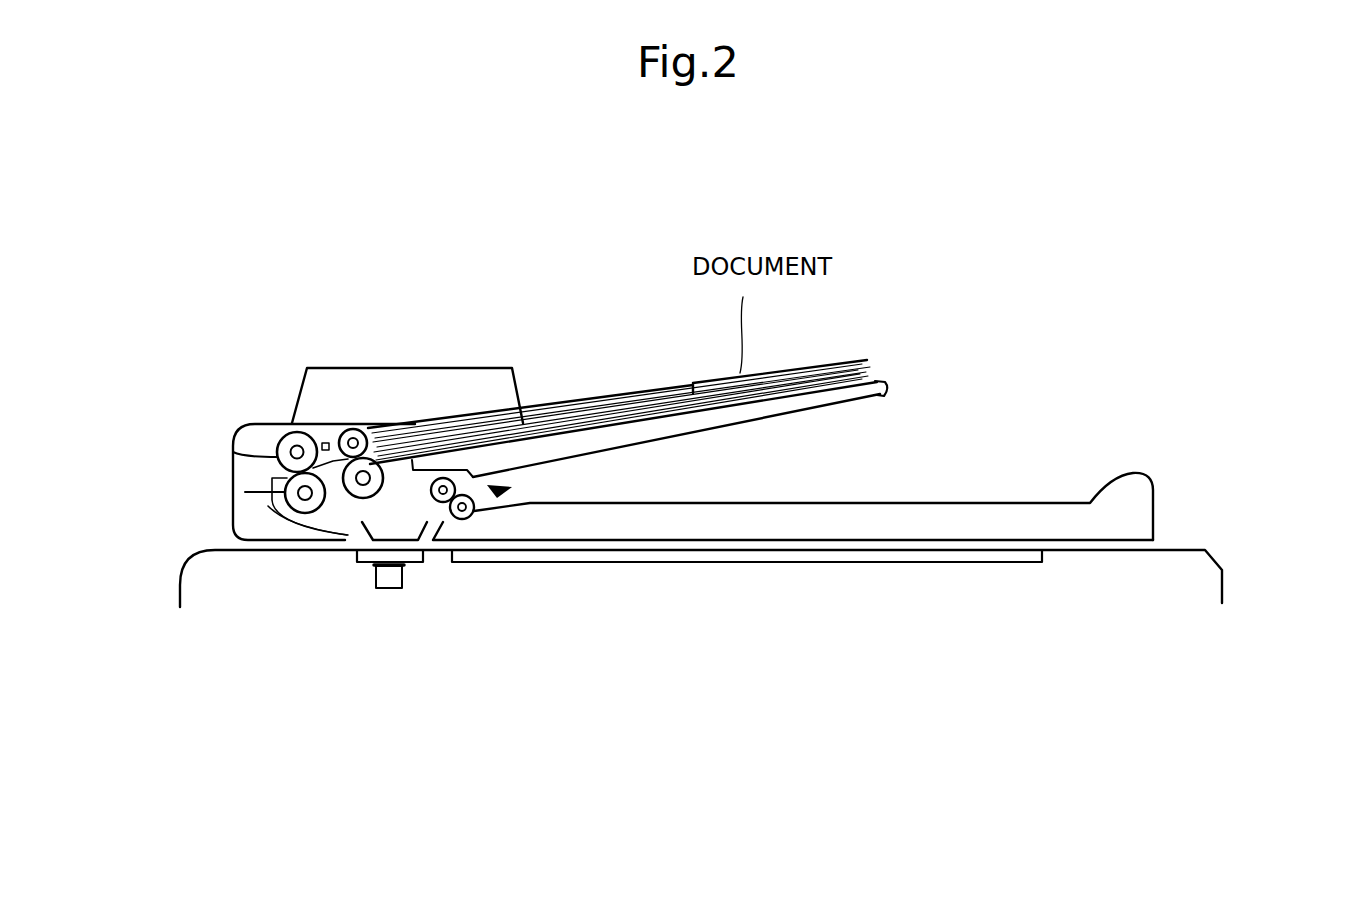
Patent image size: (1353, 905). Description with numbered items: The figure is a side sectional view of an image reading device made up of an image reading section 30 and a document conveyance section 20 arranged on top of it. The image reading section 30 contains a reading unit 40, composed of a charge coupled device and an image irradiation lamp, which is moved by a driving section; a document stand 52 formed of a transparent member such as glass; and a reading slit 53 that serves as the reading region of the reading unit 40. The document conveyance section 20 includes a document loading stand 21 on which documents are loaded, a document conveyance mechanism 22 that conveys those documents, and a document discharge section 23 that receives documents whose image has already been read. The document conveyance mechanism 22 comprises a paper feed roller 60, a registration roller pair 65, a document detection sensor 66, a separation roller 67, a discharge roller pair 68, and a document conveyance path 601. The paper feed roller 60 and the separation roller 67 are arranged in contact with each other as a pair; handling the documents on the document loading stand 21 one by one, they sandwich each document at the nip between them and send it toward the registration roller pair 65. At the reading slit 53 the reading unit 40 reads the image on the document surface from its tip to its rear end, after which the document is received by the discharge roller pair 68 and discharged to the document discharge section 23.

The document conveyance section 20 is at (1198, 323).
The image reading section 30 is at (1226, 551).
The reading unit 40 is at (392, 588).
The document stand 52 is at (534, 563).
The reading slit 53 is at (413, 563).
The paper feed roller 60 is at (372, 423).
The document loading stand 21 is at (882, 380).
The document conveyance mechanism 22 is at (415, 350).
The document discharge section 23 is at (975, 500).
The registration roller pair 65 is at (246, 492).
The document detection sensor 66 is at (324, 444).
The separation roller 67 is at (413, 423).
The discharge roller pair 68 is at (456, 483).
The document conveyance path 601 is at (268, 506).